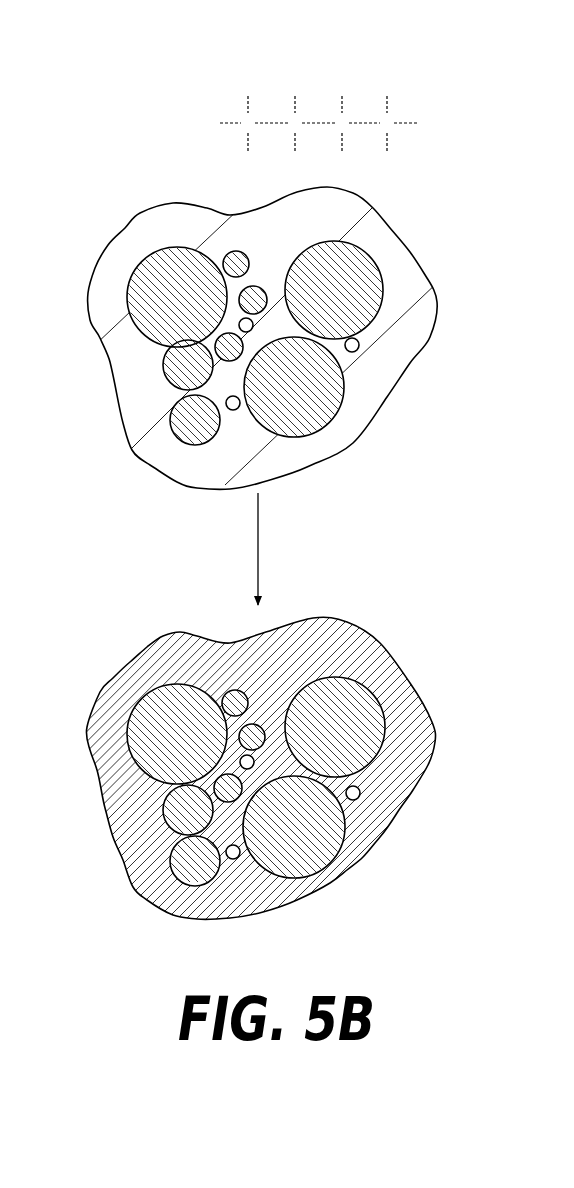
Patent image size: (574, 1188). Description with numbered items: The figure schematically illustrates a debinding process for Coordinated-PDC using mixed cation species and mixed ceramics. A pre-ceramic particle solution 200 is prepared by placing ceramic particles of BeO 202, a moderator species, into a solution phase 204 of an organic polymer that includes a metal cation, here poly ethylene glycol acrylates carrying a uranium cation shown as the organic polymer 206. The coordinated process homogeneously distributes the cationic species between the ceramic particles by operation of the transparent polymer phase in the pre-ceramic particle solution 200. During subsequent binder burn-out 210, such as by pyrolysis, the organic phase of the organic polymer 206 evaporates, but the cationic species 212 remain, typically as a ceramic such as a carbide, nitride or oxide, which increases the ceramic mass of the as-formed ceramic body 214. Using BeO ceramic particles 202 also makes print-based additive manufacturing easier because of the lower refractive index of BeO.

The pre-ceramic particle solution 200 is at (284, 346).
The ceramic particle of BeO 202 is at (167, 260).
The solution phase 204 is at (157, 440).
The organic polymer with metal cation 206 is at (258, 45).
The binder burn-out 210 is at (118, 553).
The cationic species 212 is at (315, 654).
The as-formed ceramic body 214 is at (287, 749).